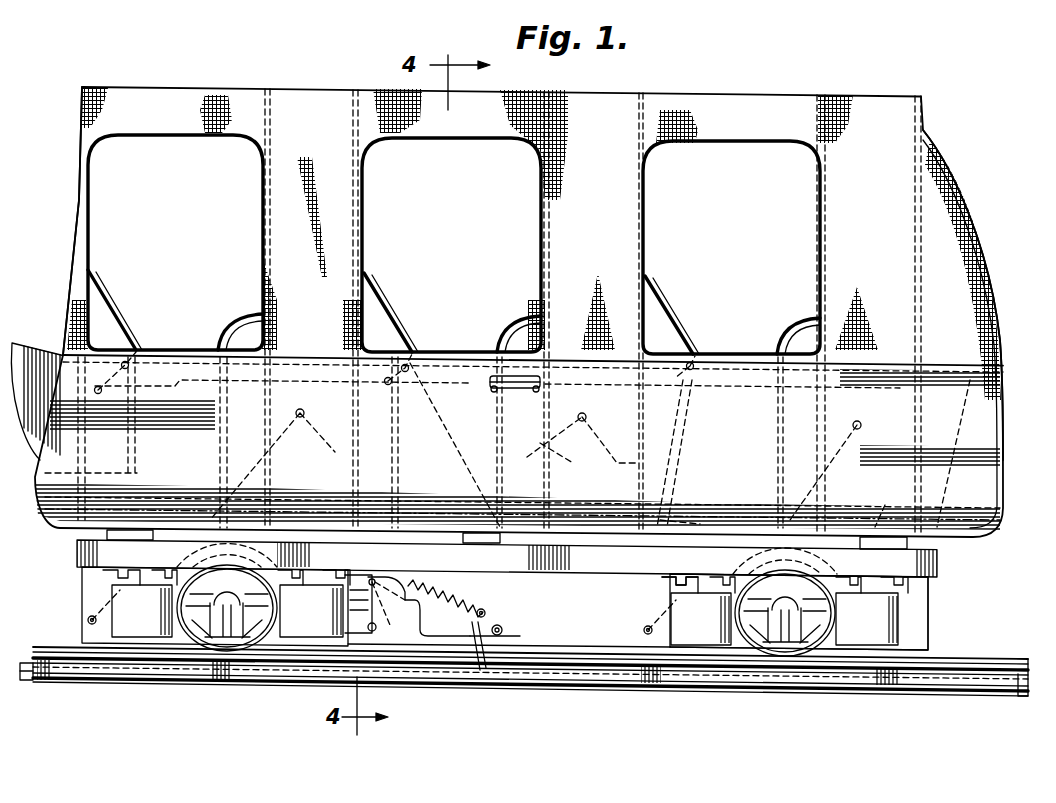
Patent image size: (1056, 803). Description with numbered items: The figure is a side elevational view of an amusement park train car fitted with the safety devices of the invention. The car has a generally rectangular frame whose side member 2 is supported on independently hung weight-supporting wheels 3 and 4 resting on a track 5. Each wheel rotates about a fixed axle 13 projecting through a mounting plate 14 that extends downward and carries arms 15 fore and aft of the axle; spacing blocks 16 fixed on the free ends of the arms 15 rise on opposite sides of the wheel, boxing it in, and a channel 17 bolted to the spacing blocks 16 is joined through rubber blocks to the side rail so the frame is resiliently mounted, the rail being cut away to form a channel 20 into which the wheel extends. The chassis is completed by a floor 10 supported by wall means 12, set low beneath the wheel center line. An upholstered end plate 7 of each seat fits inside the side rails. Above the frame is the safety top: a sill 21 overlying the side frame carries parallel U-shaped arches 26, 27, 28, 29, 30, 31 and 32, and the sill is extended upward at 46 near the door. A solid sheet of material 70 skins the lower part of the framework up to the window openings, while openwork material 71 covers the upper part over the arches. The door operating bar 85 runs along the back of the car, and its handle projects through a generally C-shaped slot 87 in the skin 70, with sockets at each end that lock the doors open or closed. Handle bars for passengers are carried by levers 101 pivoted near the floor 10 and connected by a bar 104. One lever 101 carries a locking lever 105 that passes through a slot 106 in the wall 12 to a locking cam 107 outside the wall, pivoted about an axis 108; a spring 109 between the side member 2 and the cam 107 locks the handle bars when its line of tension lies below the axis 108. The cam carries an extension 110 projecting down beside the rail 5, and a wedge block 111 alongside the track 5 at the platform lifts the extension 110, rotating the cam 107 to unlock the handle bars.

The side member 2 is at (937, 554).
The weight-supporting wheel 3 is at (227, 597).
The weight-supporting wheel 4 is at (785, 602).
The track 5 is at (569, 672).
The end plate 7 is at (232, 368).
The floor 10 is at (915, 652).
The wall means 12 is at (640, 614).
The fixed axle 13 is at (215, 640).
The mounting plate 14 is at (240, 640).
The arm 15 is at (137, 645).
The spacing block 16 is at (505, 614).
The channel 17 is at (112, 590).
The channel 20 is at (840, 530).
The sill 21 is at (885, 528).
The arch 26 is at (920, 272).
The arch 27 is at (818, 263).
The arch 28 is at (645, 238).
The arch 29 is at (540, 230).
The arch 30 is at (362, 257).
The arch 31 is at (263, 238).
The arch 32 is at (92, 231).
The upward extension of outer sill member 46 is at (970, 205).
The solid sheet of material 70 is at (437, 355).
The openwork material 71 is at (345, 205).
The operating bar 85 is at (440, 394).
The slot 87 is at (516, 376).
The lever 101 is at (280, 444).
The bar 104 is at (702, 505).
The locking lever 105 is at (372, 620).
The slot 106 is at (382, 578).
The locking cam 107 is at (503, 630).
The pivotal axis 108 is at (486, 612).
The spring 109 is at (470, 588).
The extension 110 is at (478, 650).
The wedge block 111 is at (27, 681).